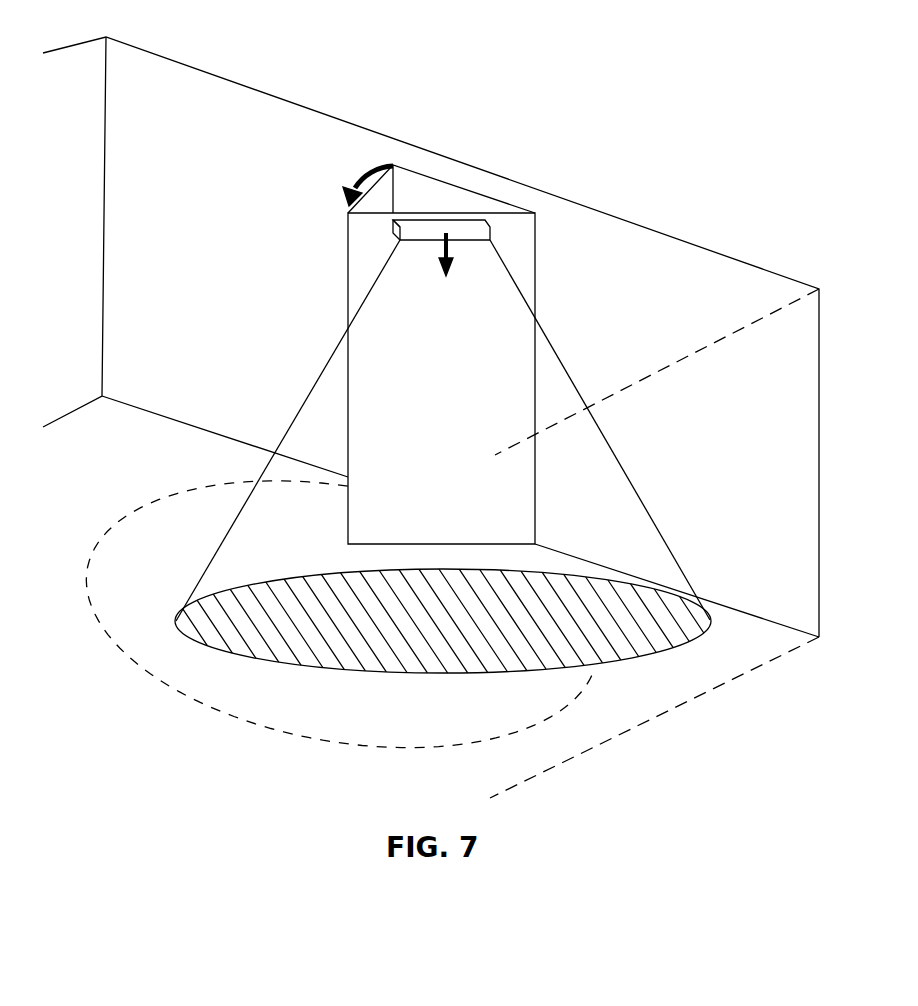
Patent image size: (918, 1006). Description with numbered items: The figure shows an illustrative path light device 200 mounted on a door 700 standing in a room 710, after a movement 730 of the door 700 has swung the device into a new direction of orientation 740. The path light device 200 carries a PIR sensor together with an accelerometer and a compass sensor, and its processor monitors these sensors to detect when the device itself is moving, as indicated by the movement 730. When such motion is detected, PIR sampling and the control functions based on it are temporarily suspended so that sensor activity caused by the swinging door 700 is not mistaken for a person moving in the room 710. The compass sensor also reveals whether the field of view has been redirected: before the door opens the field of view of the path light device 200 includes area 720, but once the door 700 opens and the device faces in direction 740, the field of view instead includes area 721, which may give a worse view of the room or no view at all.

The path light device 200 is at (442, 223).
The door 700 is at (528, 241).
The room 710 is at (110, 474).
The area 720 is at (379, 719).
The area 721 is at (655, 617).
The movement 730 is at (363, 176).
The direction of orientation 740 is at (438, 258).